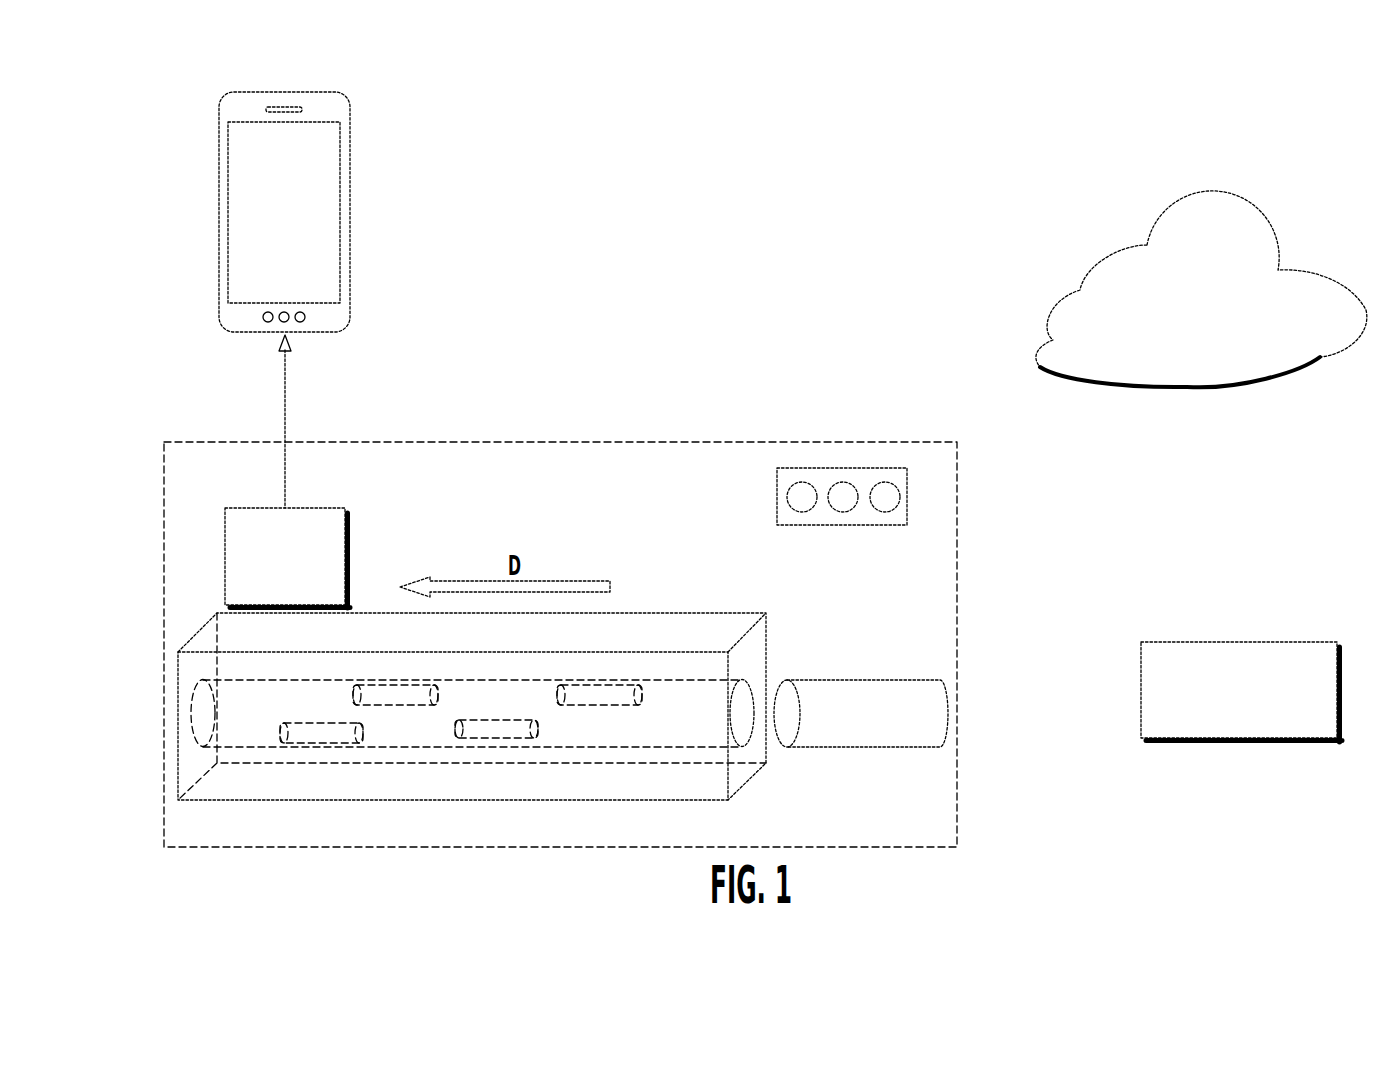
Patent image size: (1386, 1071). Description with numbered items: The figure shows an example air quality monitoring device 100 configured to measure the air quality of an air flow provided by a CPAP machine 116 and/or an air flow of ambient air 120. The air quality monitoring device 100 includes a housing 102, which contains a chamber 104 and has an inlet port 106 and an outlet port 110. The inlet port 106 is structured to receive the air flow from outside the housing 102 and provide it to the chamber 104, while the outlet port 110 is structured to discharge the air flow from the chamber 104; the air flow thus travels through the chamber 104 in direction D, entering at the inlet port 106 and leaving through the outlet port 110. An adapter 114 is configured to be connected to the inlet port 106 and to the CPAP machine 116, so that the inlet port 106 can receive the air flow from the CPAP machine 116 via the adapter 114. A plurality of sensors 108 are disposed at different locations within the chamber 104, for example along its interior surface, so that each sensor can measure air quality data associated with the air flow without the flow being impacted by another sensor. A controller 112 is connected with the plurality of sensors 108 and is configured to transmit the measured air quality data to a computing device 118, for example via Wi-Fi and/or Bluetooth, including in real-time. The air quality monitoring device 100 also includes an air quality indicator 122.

The air quality monitoring device 100 is at (718, 442).
The housing 102 is at (715, 613).
The chamber 104 is at (652, 745).
The inlet port 106 is at (745, 686).
The plurality of sensors 108 is at (325, 743).
The outlet port 110 is at (190, 710).
The controller 112 is at (252, 508).
The adapter 114 is at (848, 680).
The CPAP machine 116 is at (1181, 642).
The computing device 118 is at (293, 92).
The ambient air 120 is at (1183, 200).
The air quality indicator 122 is at (776, 503).